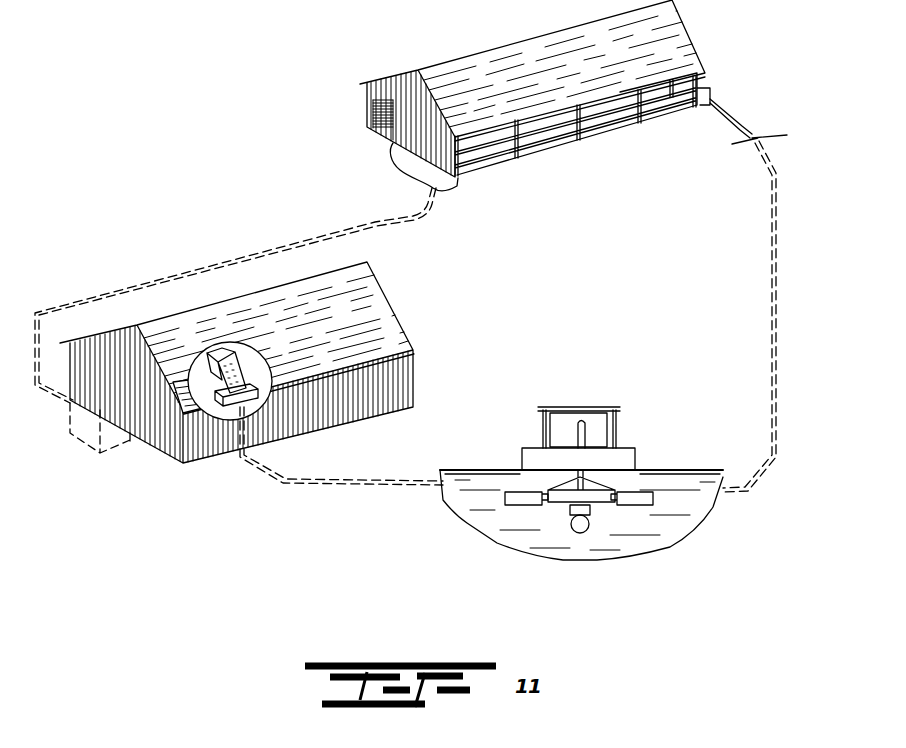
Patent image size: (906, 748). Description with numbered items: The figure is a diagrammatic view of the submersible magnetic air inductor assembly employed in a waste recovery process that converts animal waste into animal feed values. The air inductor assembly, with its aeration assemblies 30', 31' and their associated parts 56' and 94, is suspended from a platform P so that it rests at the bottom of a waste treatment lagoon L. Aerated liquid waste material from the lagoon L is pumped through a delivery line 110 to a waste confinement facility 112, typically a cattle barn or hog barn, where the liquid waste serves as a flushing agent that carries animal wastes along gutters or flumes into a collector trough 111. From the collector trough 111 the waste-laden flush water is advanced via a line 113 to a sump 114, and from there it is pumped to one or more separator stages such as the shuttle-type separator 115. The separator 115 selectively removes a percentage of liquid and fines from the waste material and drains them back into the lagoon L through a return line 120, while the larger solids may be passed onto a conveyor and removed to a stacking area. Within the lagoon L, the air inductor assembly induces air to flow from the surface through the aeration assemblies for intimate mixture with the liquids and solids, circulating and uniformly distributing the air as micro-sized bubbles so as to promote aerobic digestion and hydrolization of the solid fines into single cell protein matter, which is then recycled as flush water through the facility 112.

The waste confinement facility 112 is at (683, 44).
The collector trough 111 is at (453, 186).
The line 113 is at (283, 243).
The sump 114 is at (110, 448).
The delivery line 110 is at (780, 328).
The shuttle-type separator 115 is at (238, 376).
The return line 120 is at (320, 490).
The waste treatment lagoon L is at (707, 522).
The platform P is at (633, 452).
The mast 56' is at (603, 426).
The left cylinder 30' is at (496, 527).
The right cylinder 31' is at (646, 536).
The nozzle 94 is at (577, 535).